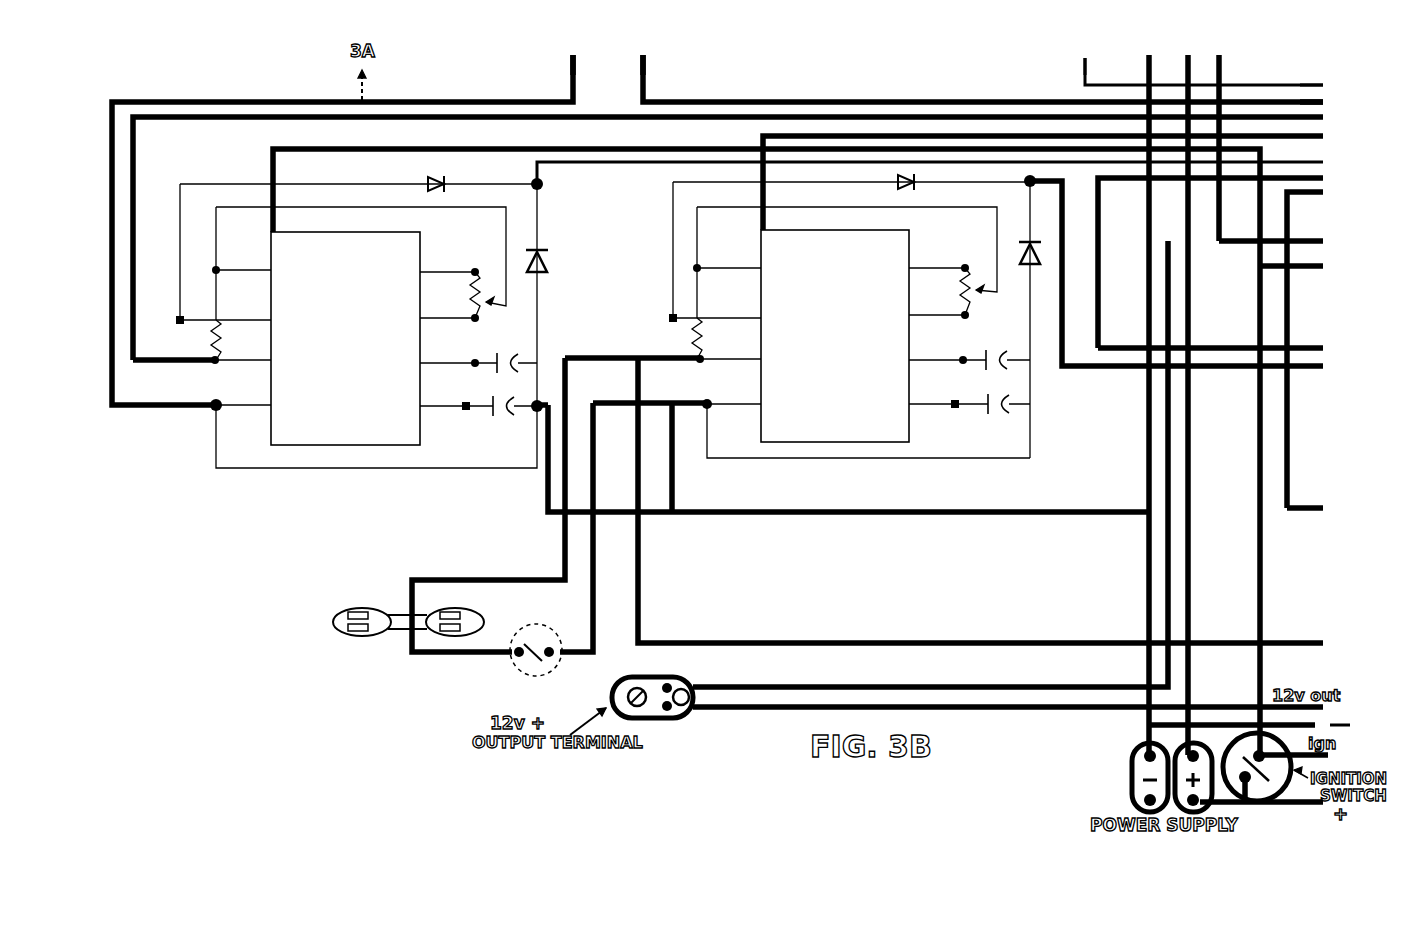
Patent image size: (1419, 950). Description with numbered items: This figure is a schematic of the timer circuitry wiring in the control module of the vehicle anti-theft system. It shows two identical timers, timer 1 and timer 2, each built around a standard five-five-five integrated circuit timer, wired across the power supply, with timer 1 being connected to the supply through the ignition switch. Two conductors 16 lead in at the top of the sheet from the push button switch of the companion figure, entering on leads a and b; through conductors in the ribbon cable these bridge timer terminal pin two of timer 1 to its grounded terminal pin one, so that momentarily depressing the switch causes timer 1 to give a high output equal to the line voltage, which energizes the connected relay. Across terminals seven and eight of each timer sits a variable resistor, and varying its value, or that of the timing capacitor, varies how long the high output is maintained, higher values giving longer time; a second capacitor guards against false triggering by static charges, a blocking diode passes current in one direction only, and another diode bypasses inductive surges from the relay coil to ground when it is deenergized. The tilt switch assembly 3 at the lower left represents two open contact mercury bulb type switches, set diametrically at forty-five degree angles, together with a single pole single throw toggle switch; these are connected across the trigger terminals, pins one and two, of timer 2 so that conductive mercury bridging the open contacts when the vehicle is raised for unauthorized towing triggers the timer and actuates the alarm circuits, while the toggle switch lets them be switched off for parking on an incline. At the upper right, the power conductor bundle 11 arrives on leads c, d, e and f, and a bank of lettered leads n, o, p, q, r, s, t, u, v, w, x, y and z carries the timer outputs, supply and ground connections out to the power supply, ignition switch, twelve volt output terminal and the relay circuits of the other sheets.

The push button switch 16 is at (717, 230).
The power connector wires 11 is at (1204, 71).
The timer 1 is at (362, 322).
The timer 2 is at (851, 318).
The mercury bulb type switches and toggle switch 3 is at (447, 642).
The wire a is at (577, 55).
The wire b is at (645, 55).
The wire c is at (1086, 58).
The wire d is at (1150, 398).
The wire e is at (1188, 398).
The wire f is at (1219, 139).
The wire n is at (1322, 85).
The wire o is at (1322, 103).
The wire p is at (739, 233).
The wire q is at (1054, 178).
The wire r is at (939, 168).
The wire s is at (1220, 258).
The wire t is at (1314, 345).
The wire u is at (1019, 459).
The wire v is at (1302, 266).
The wire w is at (1223, 348).
The wire x is at (1187, 278).
The wire y is at (1315, 508).
The wire z is at (990, 506).